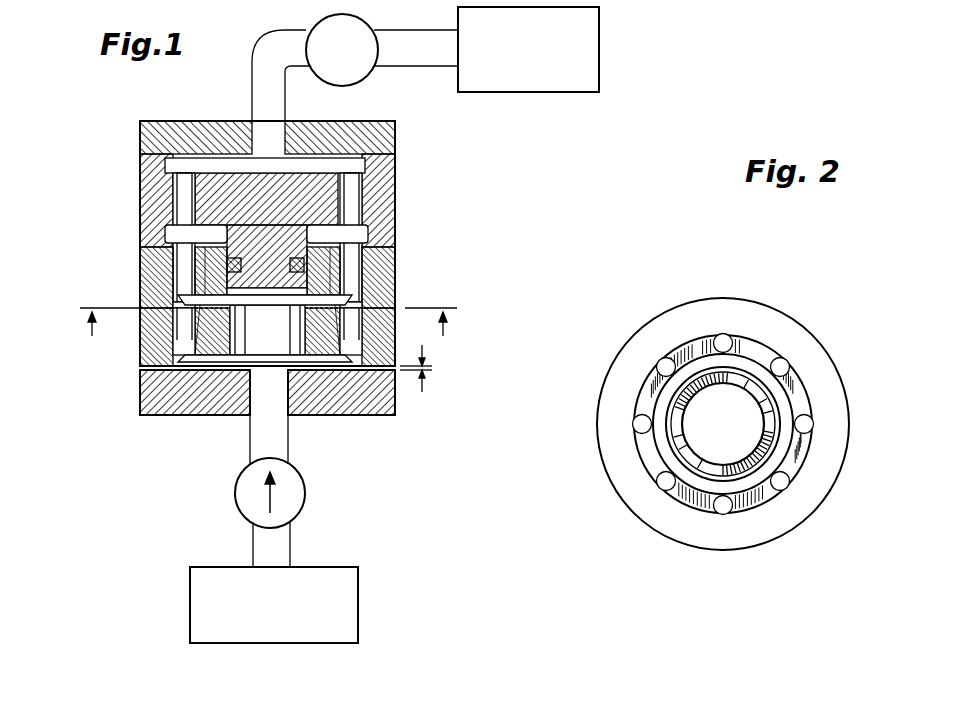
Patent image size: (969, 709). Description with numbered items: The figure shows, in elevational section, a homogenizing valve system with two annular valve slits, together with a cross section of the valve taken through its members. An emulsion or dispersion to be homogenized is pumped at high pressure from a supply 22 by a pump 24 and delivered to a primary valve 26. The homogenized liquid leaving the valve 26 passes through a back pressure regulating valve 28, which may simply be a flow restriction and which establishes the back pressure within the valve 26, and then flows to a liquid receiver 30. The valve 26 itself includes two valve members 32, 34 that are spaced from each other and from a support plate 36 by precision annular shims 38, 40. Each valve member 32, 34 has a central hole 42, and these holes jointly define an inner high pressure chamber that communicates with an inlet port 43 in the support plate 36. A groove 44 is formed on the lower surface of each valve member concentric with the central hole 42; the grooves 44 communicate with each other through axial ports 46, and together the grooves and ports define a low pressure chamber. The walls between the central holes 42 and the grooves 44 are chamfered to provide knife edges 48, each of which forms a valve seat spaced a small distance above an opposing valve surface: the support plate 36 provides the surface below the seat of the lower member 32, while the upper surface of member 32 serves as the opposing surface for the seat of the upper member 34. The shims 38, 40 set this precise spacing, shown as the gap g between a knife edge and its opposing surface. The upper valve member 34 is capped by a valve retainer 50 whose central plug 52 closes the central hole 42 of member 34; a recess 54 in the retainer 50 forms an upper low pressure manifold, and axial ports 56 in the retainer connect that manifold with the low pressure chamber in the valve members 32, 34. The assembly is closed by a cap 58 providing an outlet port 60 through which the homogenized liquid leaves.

In FIG. 1, the supply 22 is at (338, 567).
In FIG. 1, the pump 24 is at (306, 485).
In FIG. 1, the primary valve 26 is at (127, 146).
In FIG. 1, the back pressure regulating valve 28 is at (366, 77).
In FIG. 1, the liquid receiver 30 is at (532, 92).
In FIG. 1, the valve member 32 is at (152, 346).
In FIG. 1, the valve member 34 is at (141, 258).
In FIG. 2, the valve member 34 is at (832, 362).
In FIG. 1, the support plate 36 is at (150, 412).
In FIG. 1, the annular shim 38 is at (158, 317).
In FIG. 1, the annular shim 40 is at (150, 368).
In FIG. 1, the central hole 42 is at (283, 337).
In FIG. 2, the central hole 42 is at (746, 410).
In FIG. 1, the inlet port 43 is at (288, 410).
In FIG. 1, the groove 44 is at (356, 302).
In FIG. 2, the groove 44 is at (768, 353).
In FIG. 1, the axial port 46 is at (360, 264).
In FIG. 2, the axial port 46 is at (720, 342).
In FIG. 1, the knife edge 48 is at (162, 300).
In FIG. 2, the knife edge 48 is at (668, 440).
In FIG. 1, the valve retainer 50 is at (396, 190).
In FIG. 1, the central plug 52 is at (345, 242).
In FIG. 1, the recess 54 is at (360, 162).
In FIG. 1, the axial port 56 is at (172, 206).
In FIG. 1, the cap 58 is at (196, 126).
In FIG. 1, the outlet port 60 is at (258, 130).
In FIG. 1, the gap g is at (423, 368).